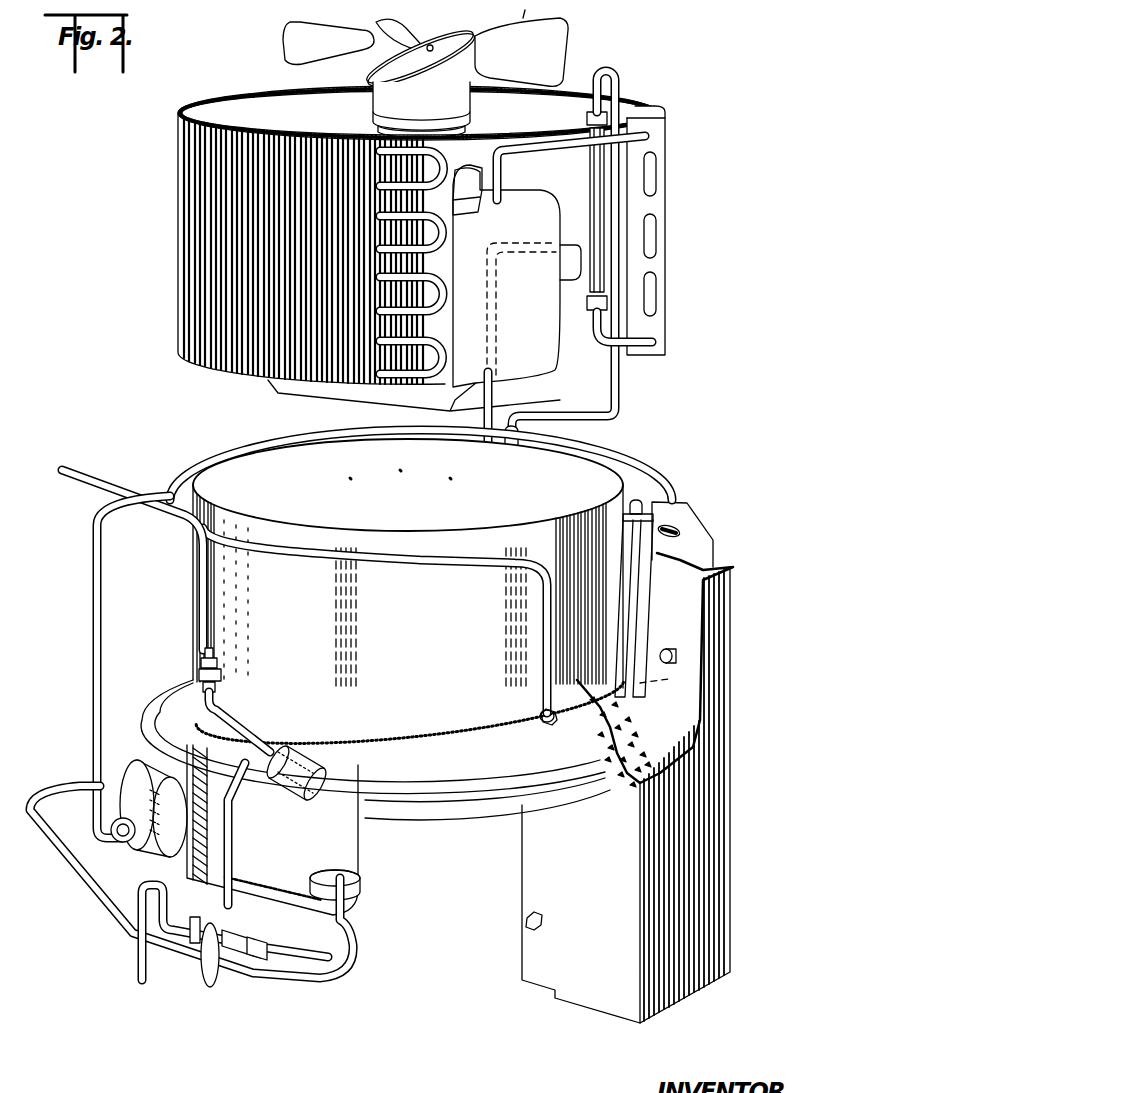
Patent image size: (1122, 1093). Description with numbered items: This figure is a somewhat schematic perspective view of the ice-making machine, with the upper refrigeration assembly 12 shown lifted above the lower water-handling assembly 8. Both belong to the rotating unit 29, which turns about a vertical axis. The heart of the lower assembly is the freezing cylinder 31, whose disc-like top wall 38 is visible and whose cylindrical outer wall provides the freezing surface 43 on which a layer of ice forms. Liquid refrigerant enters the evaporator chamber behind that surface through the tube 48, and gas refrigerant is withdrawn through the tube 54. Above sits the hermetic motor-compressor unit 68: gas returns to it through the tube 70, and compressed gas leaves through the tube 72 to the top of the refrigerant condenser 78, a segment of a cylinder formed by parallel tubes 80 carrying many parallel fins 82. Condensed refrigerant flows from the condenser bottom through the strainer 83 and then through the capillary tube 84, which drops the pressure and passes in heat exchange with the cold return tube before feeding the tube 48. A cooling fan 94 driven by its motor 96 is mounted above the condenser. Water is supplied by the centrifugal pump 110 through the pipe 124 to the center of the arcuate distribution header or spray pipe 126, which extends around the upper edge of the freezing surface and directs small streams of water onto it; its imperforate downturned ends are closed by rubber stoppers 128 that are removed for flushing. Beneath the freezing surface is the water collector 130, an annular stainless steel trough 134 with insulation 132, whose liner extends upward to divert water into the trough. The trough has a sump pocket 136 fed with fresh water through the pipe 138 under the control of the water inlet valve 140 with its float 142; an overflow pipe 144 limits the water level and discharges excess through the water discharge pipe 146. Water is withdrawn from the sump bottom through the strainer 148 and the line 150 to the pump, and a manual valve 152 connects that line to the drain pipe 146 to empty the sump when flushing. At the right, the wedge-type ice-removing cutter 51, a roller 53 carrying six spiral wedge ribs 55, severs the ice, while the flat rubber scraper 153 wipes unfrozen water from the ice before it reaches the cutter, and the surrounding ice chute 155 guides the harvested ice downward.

The water cooling tank unit 8 is at (692, 454).
The refrigeration condensing unit 12 is at (682, 92).
The rotating unit 29 is at (155, 397).
The freezing cylinder 31 is at (183, 574).
The top wall 38 is at (275, 467).
The freezing surface 43 is at (445, 715).
The tube 48 is at (518, 440).
The ice-removing cutter 51 is at (656, 708).
The roller 53 is at (628, 530).
The tube 54 is at (483, 462).
The spiral wedge ribs 55 is at (640, 582).
The motor-compressor unit 68 is at (540, 345).
The tube 70 is at (570, 250).
The tube 72 is at (497, 205).
The refrigerant condenser 78 is at (174, 204).
The parallel tubes 80 is at (448, 165).
The parallel fins 82 is at (665, 145).
The strainer 83 is at (592, 192).
The capillary tube 84 is at (608, 62).
The cooling fan 94 is at (548, 40).
The motor 96 is at (375, 108).
The centrifugal pump 110 is at (137, 792).
The pipe 124 is at (96, 705).
The distribution header or spray pipe 126 is at (592, 458).
The rubber stoppers 128 is at (545, 716).
The water collector 130 is at (160, 650).
The insulation 132 is at (465, 820).
The trough 134 is at (558, 722).
The sump pocket 136 is at (345, 780).
The pipe 138 is at (25, 468).
The water inlet valve 140 is at (222, 688).
The float 142 is at (298, 755).
The overflow pipe 144 is at (238, 800).
The water discharge pipe 146 is at (143, 1028).
The strainer 148 is at (328, 876).
The line 150 is at (50, 800).
The manual valve 152 is at (240, 928).
The rubber scraper 153 is at (685, 512).
The ice chute 155 is at (713, 845).